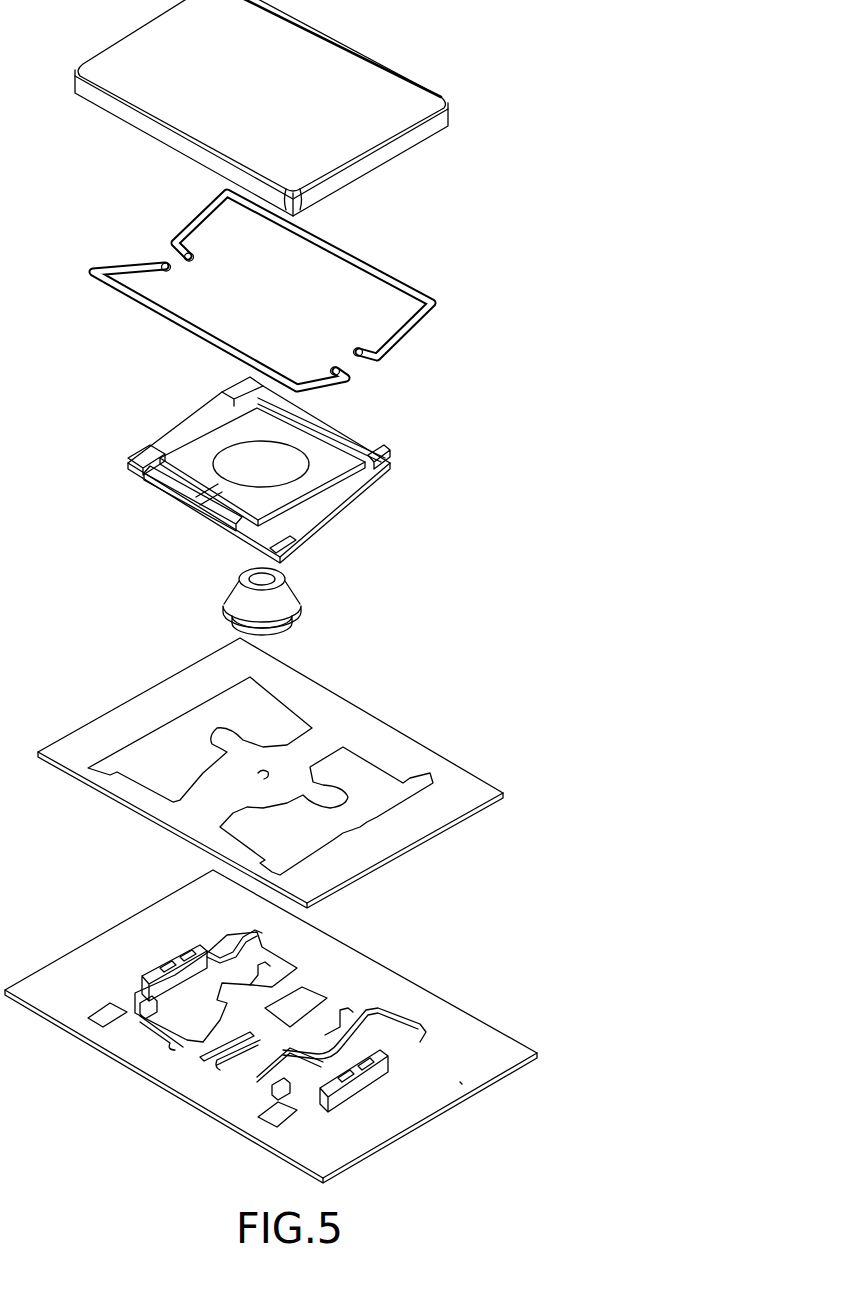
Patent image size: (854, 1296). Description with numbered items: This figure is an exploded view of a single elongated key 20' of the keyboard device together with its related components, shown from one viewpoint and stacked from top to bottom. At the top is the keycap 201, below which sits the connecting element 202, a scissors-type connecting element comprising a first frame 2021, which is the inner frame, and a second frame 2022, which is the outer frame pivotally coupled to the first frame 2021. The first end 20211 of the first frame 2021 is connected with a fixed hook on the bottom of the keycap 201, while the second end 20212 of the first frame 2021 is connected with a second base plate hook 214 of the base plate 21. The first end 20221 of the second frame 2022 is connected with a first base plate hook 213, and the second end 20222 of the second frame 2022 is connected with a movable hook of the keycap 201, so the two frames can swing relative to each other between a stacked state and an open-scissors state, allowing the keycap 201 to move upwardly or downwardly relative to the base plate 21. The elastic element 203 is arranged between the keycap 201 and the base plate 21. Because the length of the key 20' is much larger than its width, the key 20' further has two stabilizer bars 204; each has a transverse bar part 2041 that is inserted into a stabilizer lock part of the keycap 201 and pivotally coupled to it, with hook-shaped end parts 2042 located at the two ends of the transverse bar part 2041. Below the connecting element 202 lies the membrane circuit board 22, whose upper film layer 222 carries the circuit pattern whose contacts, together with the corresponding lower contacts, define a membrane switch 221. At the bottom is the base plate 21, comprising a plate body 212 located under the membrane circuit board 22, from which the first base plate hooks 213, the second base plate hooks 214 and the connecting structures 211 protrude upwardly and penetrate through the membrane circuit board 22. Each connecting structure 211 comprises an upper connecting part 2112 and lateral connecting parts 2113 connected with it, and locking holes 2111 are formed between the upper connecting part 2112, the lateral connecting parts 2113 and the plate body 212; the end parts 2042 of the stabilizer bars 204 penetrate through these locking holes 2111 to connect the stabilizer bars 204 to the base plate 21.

The key 20' is at (310, 317).
The keycap 201 is at (322, 50).
The connecting element 202 is at (520, 500).
The first frame 2021 is at (200, 450).
The first end of the first frame 20211 is at (135, 470).
The second end of the first frame 20212 is at (366, 452).
The second frame 2022 is at (345, 500).
The first end of the second frame 20221 is at (205, 508).
The second end of the second frame 20222 is at (320, 420).
The elastic element 203 is at (285, 596).
The stabilizer bar 204 is at (389, 262).
The transverse bar part 2041 is at (330, 247).
The end part 2042 is at (365, 350).
The membrane circuit board 22 is at (384, 693).
The membrane switch 221 is at (268, 777).
The upper film layer 222 is at (404, 749).
The base plate 21 is at (474, 1034).
The connecting structure 211 is at (160, 955).
The locking hole 2111 is at (188, 965).
The upper connecting part 2112 is at (160, 963).
The lateral connecting part 2113 is at (100, 982).
The plate body 212 is at (460, 1082).
The first base plate hook 213 is at (110, 1028).
The second base plate hook 214 is at (257, 972).